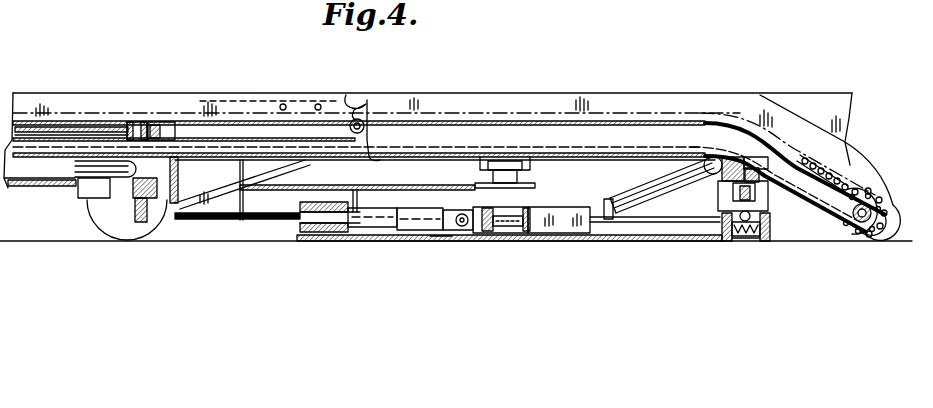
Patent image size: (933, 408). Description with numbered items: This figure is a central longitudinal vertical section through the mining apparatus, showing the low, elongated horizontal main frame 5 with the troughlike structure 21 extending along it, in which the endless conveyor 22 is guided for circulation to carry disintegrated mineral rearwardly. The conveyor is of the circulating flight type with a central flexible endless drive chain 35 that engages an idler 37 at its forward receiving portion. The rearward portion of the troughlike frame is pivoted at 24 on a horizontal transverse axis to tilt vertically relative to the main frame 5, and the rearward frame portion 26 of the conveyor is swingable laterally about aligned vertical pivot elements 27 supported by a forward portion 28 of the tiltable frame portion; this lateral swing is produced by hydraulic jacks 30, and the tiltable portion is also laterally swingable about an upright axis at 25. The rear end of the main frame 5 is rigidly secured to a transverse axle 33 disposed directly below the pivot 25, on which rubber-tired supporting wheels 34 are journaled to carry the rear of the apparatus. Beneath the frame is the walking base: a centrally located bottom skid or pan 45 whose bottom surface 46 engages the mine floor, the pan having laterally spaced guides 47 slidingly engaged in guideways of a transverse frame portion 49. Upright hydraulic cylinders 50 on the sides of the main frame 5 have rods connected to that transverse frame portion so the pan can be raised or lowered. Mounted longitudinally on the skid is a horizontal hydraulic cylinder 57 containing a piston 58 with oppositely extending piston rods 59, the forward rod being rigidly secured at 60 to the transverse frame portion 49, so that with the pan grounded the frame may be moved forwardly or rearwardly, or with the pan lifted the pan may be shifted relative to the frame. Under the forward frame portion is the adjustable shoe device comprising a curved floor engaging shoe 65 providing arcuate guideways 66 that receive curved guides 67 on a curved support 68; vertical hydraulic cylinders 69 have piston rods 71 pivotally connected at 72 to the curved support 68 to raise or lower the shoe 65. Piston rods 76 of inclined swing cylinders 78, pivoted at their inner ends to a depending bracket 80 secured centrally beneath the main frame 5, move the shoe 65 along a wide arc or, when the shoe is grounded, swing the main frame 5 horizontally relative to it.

The main frame 5 is at (590, 106).
The troughlike structure 21 is at (647, 105).
The endless conveyor 22 is at (822, 168).
The pivot 24 is at (360, 121).
The upright axis 25 is at (138, 126).
The rearward frame portion 26 is at (38, 125).
The vertical pivot elements 27 is at (153, 182).
The forward portion 28 is at (266, 104).
The hydraulic jacks 30 is at (104, 168).
The transverse axle 33 is at (143, 205).
The supporting wheels 34 is at (120, 236).
The endless drive chain 35 is at (855, 190).
The idler 37 is at (875, 200).
The bottom skid or pan 45 is at (632, 240).
The bottom surface 46 is at (510, 240).
The guides 47 is at (667, 224).
The transverse frame portion 49 is at (500, 210).
The upright hydraulic cylinders 50 is at (518, 172).
The horizontal hydraulic cylinder 57 is at (420, 208).
The piston 58 is at (441, 237).
The piston rods 59 is at (275, 222).
The rigid connection 60 is at (510, 224).
The floor engaging shoe 65 is at (748, 240).
The arcuate guideways 66 is at (775, 226).
The curved guides 67 is at (729, 238).
The curved support 68 is at (785, 220).
The vertical hydraulic cylinders 69 is at (745, 176).
The piston rods 71 is at (505, 197).
The transverse pivots 72 is at (762, 224).
The piston rods 76 is at (613, 203).
The hydraulic cylinders 78 is at (644, 194).
The depending bracket 80 is at (717, 160).